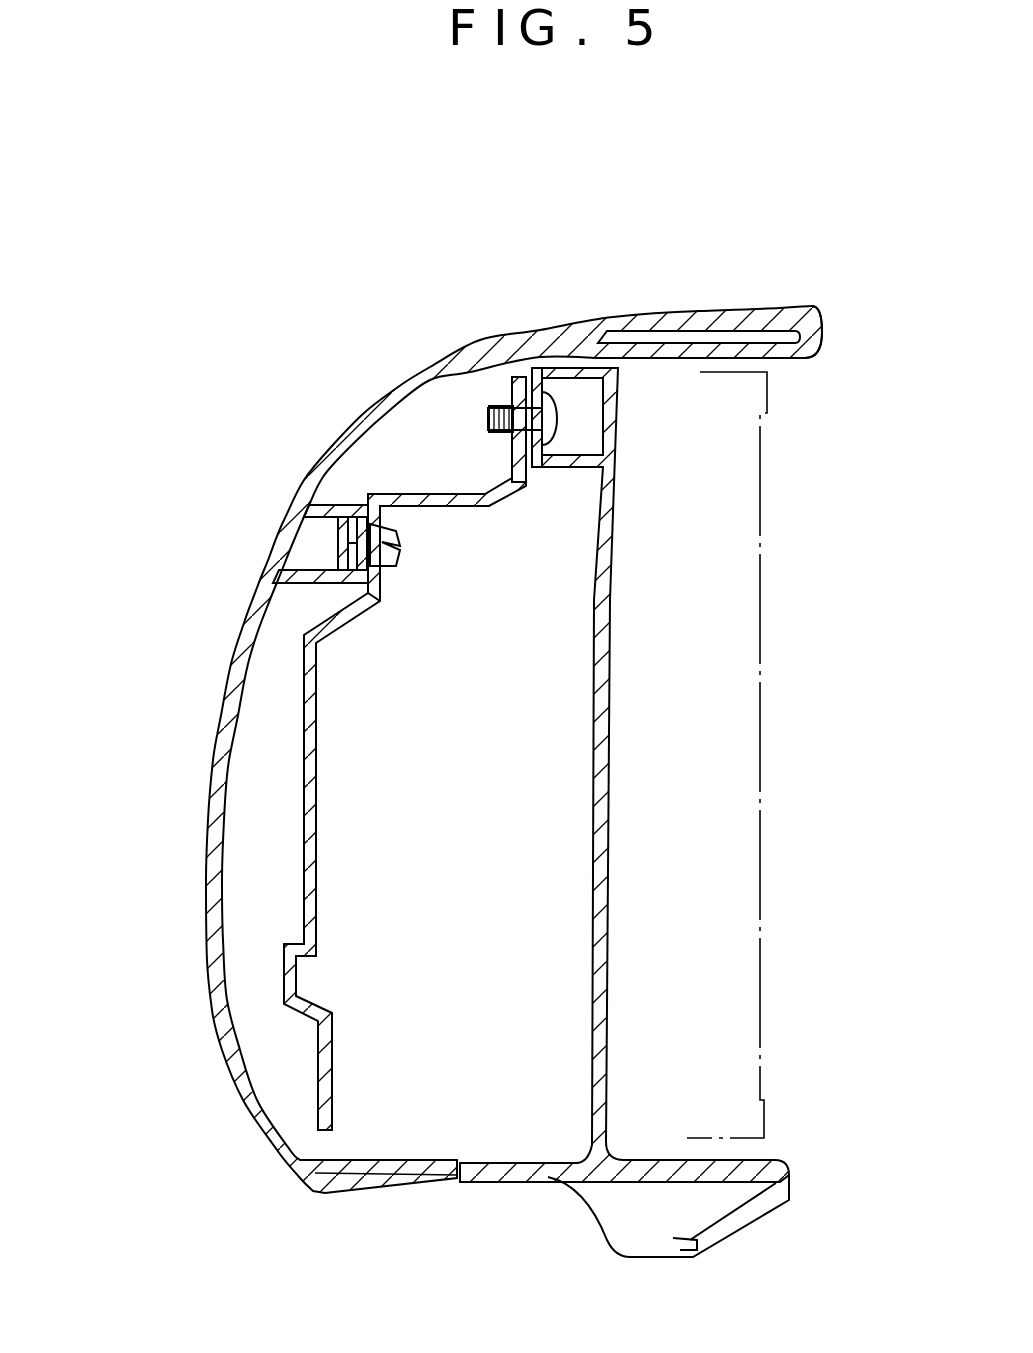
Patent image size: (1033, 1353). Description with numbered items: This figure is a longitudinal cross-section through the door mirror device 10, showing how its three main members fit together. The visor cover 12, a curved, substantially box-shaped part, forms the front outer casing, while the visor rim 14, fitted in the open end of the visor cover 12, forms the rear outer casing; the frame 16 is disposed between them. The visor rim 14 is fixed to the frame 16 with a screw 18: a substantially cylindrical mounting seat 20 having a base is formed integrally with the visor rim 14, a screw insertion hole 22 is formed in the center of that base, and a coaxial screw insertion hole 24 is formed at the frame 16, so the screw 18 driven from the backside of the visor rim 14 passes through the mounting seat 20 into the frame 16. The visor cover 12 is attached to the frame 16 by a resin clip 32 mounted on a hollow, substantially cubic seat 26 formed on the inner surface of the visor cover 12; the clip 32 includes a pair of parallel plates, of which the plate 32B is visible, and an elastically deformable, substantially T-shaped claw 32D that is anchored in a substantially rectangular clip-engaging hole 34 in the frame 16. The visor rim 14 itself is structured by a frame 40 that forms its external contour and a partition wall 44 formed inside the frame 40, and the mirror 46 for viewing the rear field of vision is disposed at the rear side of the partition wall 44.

The door mirror device 10 is at (730, 257).
The visor cover 12 is at (200, 777).
The visor rim 14 is at (830, 353).
The frame 16 is at (297, 860).
The screw 18 is at (493, 410).
The mounting seat 20 is at (557, 470).
The screw insertion hole 22 is at (558, 418).
The screw insertion hole 24 is at (487, 425).
The hollow seat 26 is at (302, 590).
The resin clip 32 is at (410, 533).
The plate 32B is at (338, 550).
The claw 32D is at (396, 556).
The clip-engaging hole 34 is at (408, 562).
The frame 40 is at (753, 1167).
The partition wall 44 is at (612, 660).
The mirror 46 is at (760, 933).